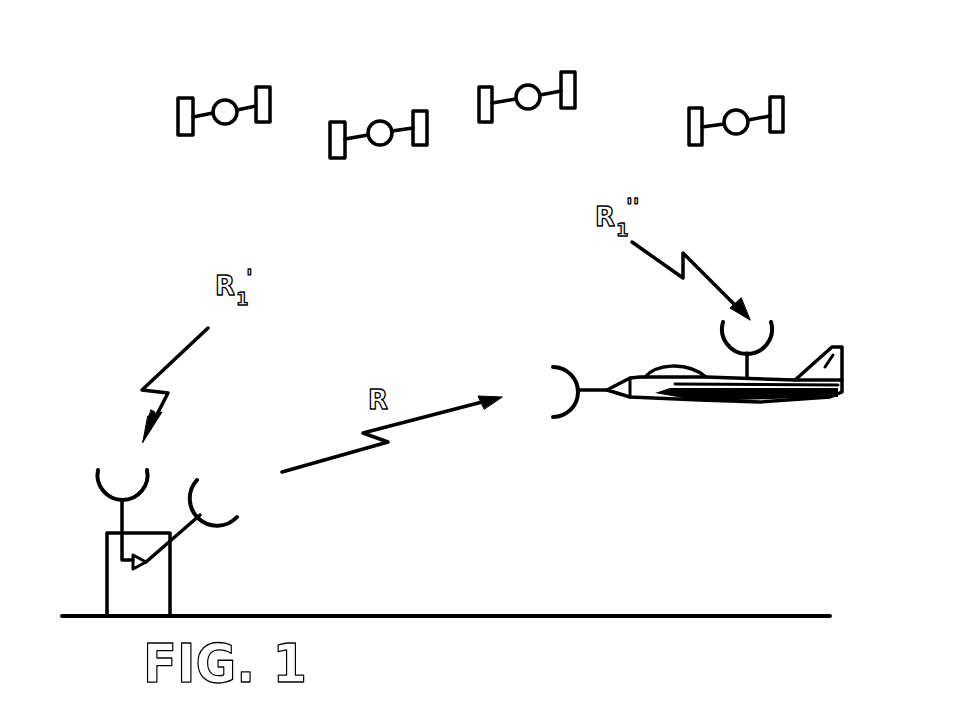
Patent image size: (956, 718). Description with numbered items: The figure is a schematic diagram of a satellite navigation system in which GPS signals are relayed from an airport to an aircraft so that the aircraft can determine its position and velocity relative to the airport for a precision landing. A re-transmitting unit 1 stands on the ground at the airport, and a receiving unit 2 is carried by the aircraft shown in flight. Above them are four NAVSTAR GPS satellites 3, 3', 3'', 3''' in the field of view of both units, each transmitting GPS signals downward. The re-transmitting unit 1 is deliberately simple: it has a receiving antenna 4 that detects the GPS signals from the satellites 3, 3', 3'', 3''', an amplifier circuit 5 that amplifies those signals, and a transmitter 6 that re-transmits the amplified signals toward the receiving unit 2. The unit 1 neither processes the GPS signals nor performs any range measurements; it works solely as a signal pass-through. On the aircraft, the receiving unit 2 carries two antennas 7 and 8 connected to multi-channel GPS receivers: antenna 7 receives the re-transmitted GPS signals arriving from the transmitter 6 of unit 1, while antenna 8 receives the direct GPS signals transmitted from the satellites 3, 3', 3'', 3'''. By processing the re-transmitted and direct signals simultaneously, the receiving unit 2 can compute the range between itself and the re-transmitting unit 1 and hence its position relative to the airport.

The re-transmitting unit 1 is at (107, 577).
The receiving unit 2 is at (724, 405).
The satellite 3 is at (224, 79).
The satellite 3' is at (378, 90).
The satellite 3'' is at (527, 61).
The satellite 3''' is at (736, 80).
The receiving antenna 4 is at (97, 486).
The amplifier circuit 5 is at (146, 564).
The transmitter 6 is at (197, 488).
The antenna 7 is at (572, 366).
The antenna 8 is at (775, 337).